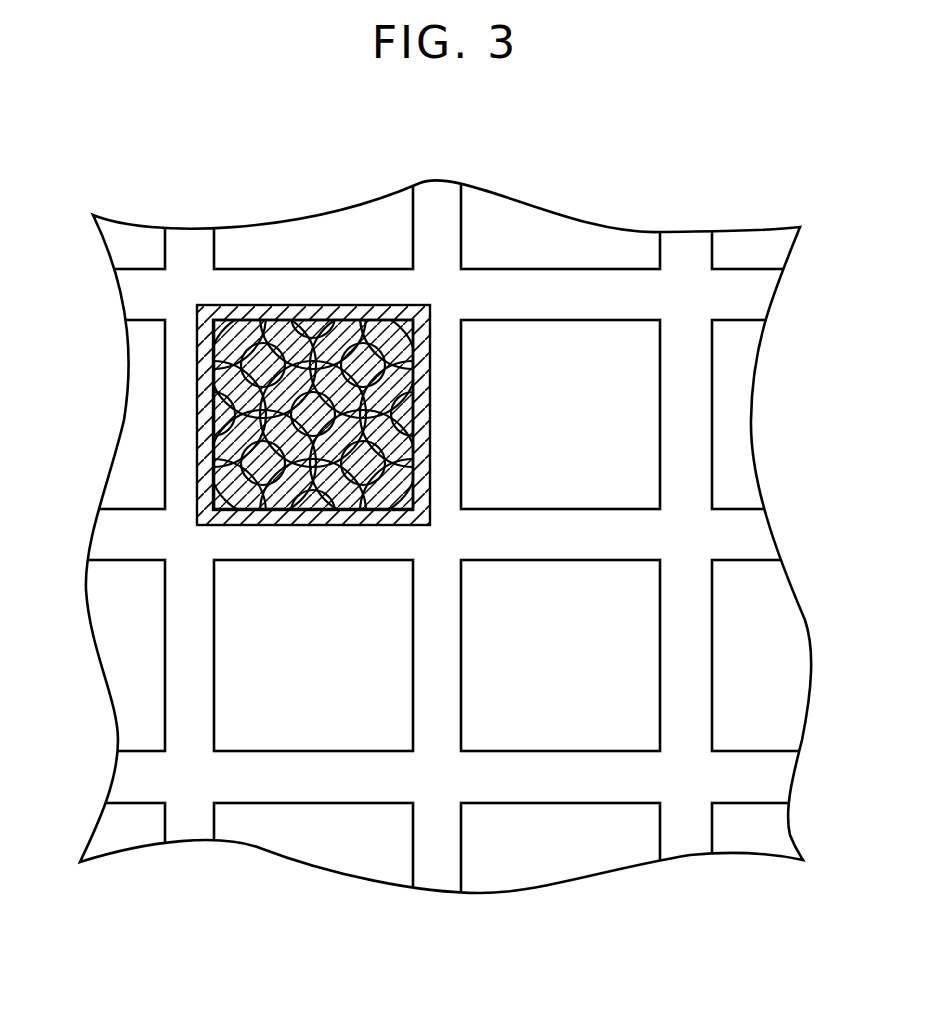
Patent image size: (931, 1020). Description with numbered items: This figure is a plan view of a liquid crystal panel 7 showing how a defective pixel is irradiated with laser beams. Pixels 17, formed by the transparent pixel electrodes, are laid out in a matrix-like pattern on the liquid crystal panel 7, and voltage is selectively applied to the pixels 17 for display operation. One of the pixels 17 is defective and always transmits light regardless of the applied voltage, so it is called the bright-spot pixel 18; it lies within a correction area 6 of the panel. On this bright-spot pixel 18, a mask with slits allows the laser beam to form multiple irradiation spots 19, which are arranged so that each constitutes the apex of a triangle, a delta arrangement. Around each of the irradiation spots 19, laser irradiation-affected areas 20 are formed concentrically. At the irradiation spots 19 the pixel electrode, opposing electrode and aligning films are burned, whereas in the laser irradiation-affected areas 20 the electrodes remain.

The correction area 6 is at (432, 318).
The liquid crystal panel 7 is at (755, 372).
The pixels 17 is at (213, 247).
The bright-spot pixel 18 is at (390, 307).
The irradiation spots 19 is at (318, 340).
The laser irradiation-affected areas 20 is at (375, 340).